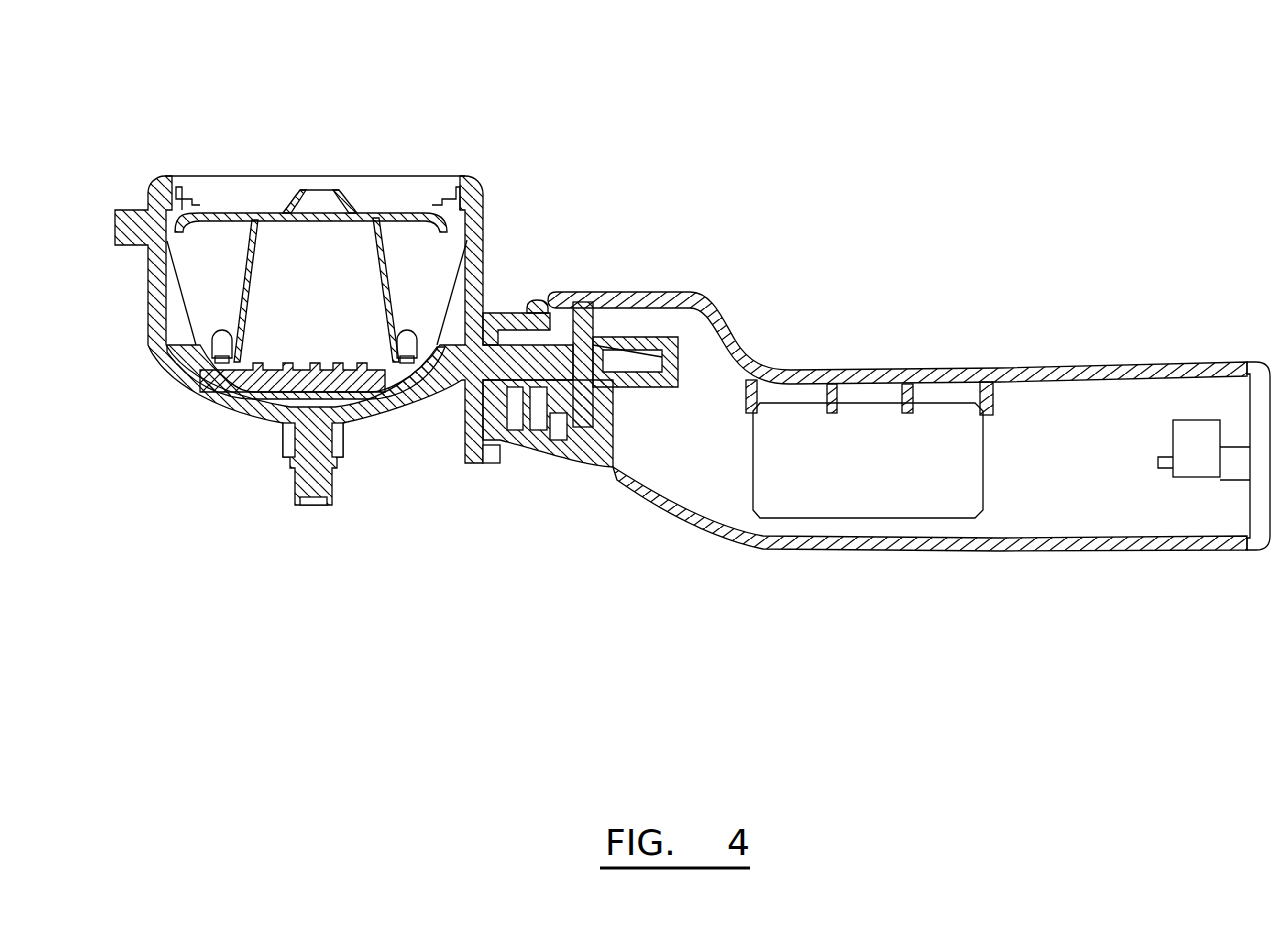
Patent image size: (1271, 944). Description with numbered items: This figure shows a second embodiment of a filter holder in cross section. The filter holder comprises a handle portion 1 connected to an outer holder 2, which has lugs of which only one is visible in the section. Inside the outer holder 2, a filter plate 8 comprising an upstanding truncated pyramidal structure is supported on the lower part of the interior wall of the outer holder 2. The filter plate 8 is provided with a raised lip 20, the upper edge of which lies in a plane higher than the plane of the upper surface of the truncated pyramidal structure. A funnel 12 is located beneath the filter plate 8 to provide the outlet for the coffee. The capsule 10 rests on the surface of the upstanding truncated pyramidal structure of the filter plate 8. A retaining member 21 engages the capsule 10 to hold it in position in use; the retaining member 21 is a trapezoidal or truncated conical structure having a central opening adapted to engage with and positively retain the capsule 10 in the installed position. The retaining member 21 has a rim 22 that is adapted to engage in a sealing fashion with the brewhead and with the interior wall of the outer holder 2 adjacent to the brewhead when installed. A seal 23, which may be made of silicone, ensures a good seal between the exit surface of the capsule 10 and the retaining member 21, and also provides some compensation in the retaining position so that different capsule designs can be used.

The handle portion 1 is at (1085, 415).
The outer holder 2 is at (480, 283).
The filter plate 8 is at (217, 397).
The capsule 10 is at (340, 272).
The funnel 12 is at (308, 473).
The raised lip 20 is at (316, 250).
The retaining member 21 is at (418, 255).
The rim 22 is at (230, 258).
The seal 23 is at (233, 343).